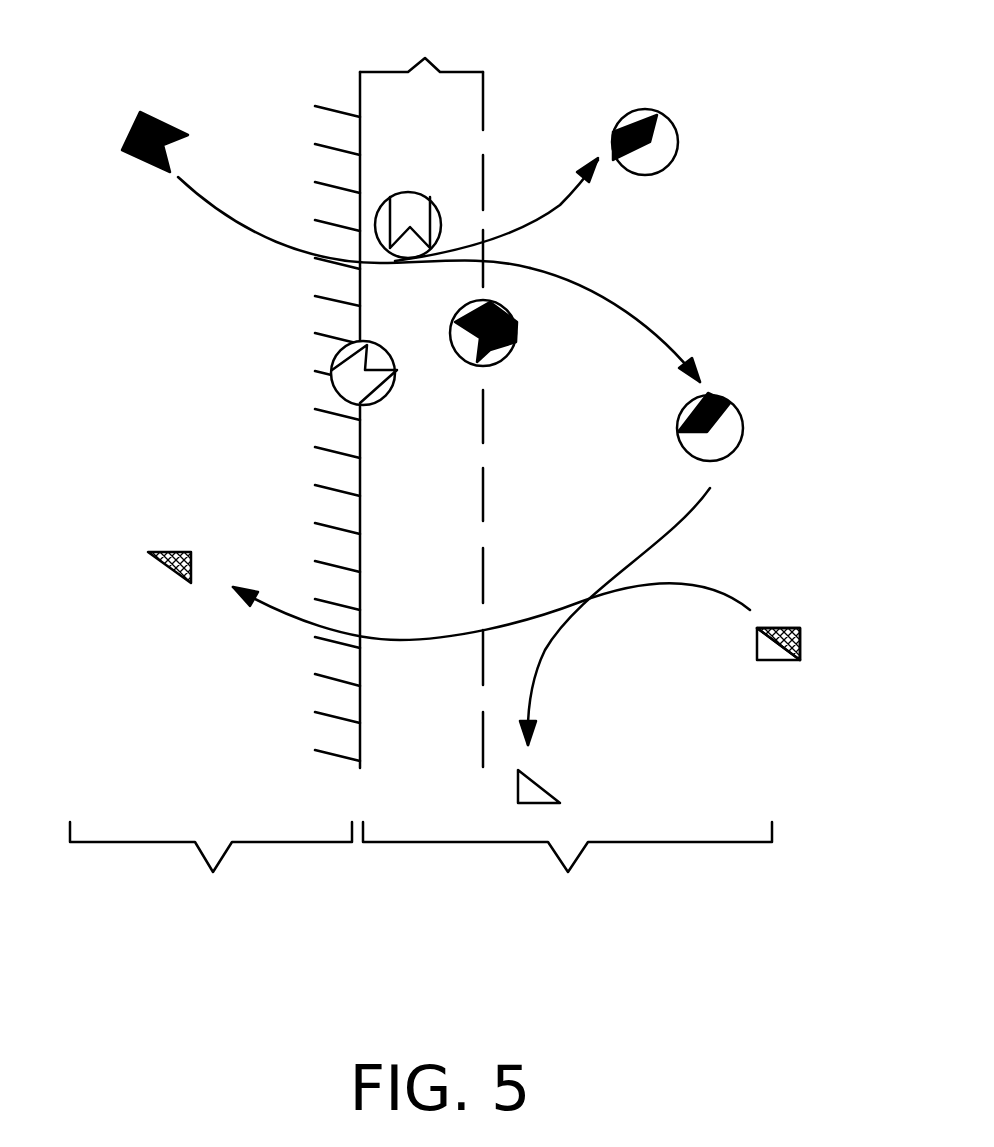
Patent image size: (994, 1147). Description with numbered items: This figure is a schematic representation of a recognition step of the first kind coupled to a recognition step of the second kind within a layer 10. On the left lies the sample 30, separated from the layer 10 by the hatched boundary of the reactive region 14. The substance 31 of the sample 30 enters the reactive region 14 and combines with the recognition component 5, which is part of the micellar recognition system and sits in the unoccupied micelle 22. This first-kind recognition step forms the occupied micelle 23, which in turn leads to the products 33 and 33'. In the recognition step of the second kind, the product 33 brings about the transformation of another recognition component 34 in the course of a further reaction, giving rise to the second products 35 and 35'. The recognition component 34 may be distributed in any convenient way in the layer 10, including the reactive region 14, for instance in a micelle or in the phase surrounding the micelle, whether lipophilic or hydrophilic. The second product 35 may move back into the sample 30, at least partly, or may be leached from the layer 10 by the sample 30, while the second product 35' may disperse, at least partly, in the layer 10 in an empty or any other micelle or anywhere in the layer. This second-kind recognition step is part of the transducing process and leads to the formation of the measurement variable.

The recognition component 5 is at (442, 218).
The layer 10 is at (567, 866).
The reactive region 14 is at (273, 197).
The unoccupied micelle 22 is at (408, 192).
The occupied micelle 23 is at (510, 305).
The sample 30 is at (211, 866).
The substance 31 is at (132, 112).
The product 33 is at (691, 364).
The product 33' is at (583, 170).
The recognition component 34 is at (787, 628).
The second product 35 is at (382, 520).
The second product 35' is at (618, 645).